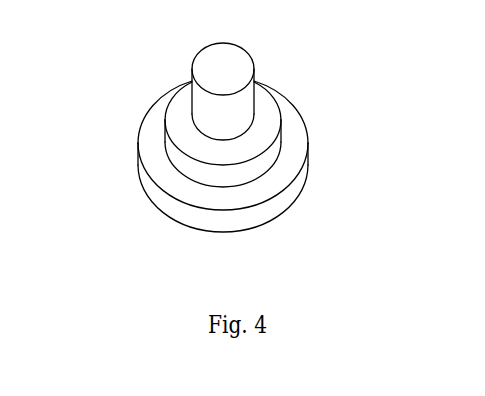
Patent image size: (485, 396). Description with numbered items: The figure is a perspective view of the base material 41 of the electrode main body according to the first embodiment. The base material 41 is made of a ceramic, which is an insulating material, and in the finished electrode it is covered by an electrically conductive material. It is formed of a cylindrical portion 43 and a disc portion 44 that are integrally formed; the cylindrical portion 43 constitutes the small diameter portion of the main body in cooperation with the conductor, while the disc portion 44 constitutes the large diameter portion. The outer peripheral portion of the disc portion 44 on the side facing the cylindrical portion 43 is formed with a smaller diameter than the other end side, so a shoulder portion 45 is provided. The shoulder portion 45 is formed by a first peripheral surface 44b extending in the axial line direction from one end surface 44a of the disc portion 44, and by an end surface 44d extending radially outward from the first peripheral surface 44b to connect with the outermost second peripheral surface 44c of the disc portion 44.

The base material 41 is at (146, 91).
The cylindrical portion 43 is at (257, 106).
The disc portion 44 is at (305, 178).
The one end surface 44a is at (163, 114).
The first peripheral surface 44b is at (164, 158).
The second peripheral surface 44c is at (163, 204).
The end surface 44d is at (198, 192).
The shoulder portion 45 is at (293, 144).